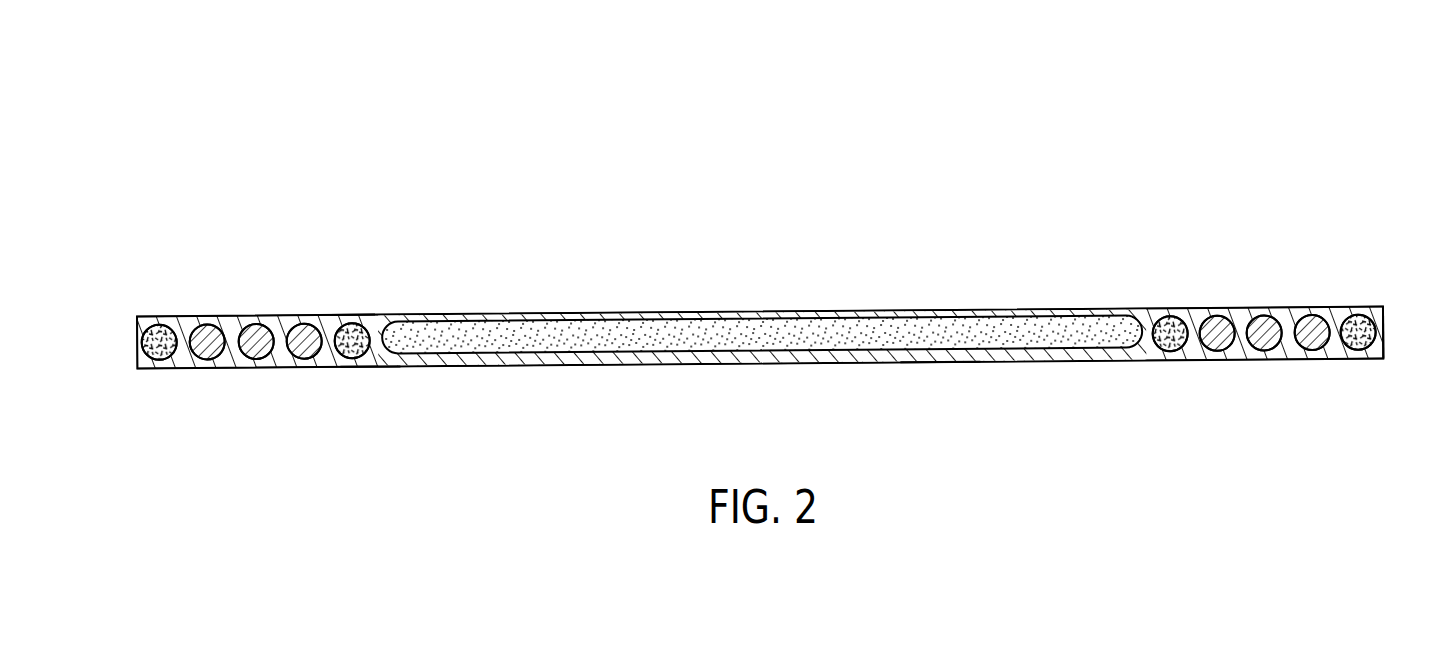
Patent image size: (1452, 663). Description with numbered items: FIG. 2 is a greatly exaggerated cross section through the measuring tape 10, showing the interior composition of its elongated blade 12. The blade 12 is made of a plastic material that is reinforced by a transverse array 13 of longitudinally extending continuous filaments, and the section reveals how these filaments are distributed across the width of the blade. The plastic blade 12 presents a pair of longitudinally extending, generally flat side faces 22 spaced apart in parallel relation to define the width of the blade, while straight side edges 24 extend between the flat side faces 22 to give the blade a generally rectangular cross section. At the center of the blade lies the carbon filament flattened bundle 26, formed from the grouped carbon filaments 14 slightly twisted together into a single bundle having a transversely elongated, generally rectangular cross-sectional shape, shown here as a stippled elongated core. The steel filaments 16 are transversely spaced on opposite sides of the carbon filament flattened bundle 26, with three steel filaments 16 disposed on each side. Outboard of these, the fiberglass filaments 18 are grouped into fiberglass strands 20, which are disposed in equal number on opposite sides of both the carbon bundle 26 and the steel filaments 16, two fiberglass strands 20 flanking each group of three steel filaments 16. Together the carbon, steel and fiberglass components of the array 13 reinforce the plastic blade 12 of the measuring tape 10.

The measuring tape 10 is at (1016, 125).
The elongated blade 12 is at (1184, 315).
The transverse array of longitudinally extending continuous filaments 13 is at (890, 255).
The grouped carbon filaments 14 is at (543, 358).
The steel filaments 16 is at (210, 360).
The fiberglass filaments 18 is at (163, 332).
The fiberglass strands 20 is at (338, 312).
The flat side faces 22 is at (370, 372).
The straight side edges 24 is at (1383, 328).
The carbon filament flattened bundle 26 is at (943, 372).